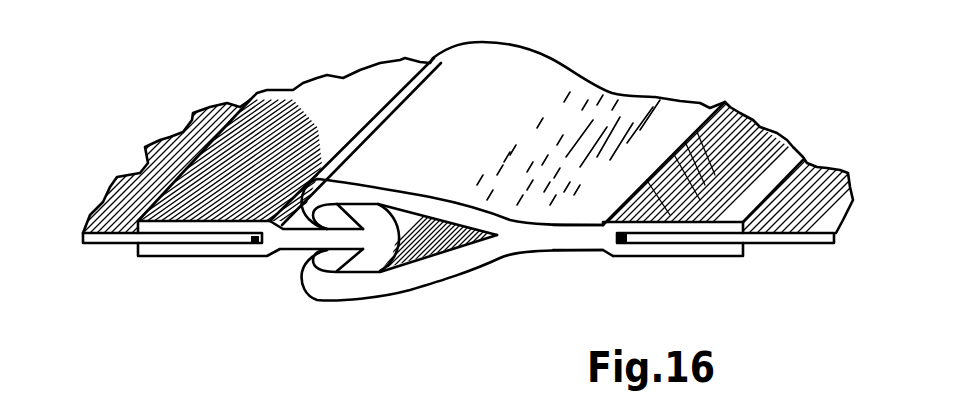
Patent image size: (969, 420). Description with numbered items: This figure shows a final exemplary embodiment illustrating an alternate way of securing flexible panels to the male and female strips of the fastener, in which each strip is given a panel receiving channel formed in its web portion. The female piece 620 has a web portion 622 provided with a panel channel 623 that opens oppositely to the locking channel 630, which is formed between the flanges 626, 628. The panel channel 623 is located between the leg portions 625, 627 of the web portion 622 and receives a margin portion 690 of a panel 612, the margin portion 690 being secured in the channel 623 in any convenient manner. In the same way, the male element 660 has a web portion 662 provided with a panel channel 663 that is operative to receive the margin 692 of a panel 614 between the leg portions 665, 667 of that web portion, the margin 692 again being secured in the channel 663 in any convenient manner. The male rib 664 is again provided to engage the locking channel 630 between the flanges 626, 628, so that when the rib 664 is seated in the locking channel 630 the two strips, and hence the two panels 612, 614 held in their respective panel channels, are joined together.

The female piece 620 is at (658, 45).
The web portion 622 is at (670, 113).
The web portion 662 is at (343, 90).
The panel channel 663 is at (262, 195).
The leg portion 667 is at (210, 227).
The margin 692 is at (210, 240).
The leg portion 665 is at (253, 250).
The panel 614 is at (115, 245).
The male element 660 is at (264, 334).
The male rib 664 is at (358, 268).
The flange 626 is at (413, 193).
The flange 628 is at (396, 285).
The locking channel 630 is at (437, 272).
The panel channel 623 is at (620, 252).
The leg portion 627 is at (642, 250).
The margin portion 690 is at (710, 247).
The panel 612 is at (773, 238).
The leg portion 625 is at (654, 212).